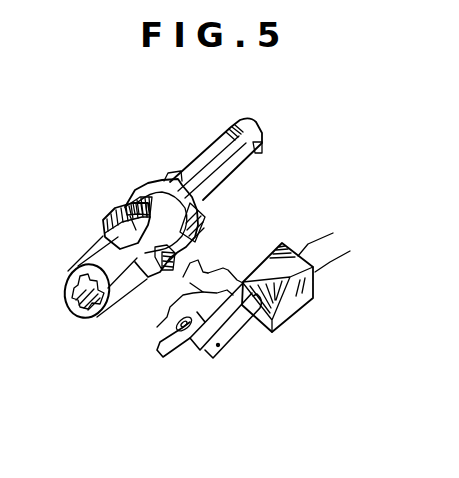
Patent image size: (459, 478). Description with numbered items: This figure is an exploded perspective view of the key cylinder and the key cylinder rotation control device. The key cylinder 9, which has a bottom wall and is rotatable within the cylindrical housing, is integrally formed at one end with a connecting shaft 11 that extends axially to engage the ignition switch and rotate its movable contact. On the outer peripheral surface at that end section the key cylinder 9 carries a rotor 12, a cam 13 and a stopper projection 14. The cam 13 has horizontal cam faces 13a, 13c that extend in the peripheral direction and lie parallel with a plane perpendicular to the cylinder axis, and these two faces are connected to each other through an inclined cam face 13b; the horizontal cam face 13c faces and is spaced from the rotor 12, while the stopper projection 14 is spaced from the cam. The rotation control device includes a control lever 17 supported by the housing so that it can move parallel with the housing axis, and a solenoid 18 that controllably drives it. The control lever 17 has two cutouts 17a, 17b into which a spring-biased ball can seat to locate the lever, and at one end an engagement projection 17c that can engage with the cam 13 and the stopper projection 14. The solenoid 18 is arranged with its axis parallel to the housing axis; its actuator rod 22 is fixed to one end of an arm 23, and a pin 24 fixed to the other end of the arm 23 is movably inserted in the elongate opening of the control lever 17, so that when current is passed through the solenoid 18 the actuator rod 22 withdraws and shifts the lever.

The key cylinder 9 is at (78, 265).
The connecting shaft 11 is at (252, 158).
The rotor 12 is at (104, 217).
The cam 13 is at (147, 186).
The horizontal cam face 13a is at (216, 212).
The inclined cam face 13b is at (173, 180).
The horizontal cam face 13c is at (130, 199).
The stopper projection 14 is at (152, 278).
The control lever 17 is at (228, 338).
The cutout 17a is at (180, 310).
The cutout 17b is at (220, 270).
The engagement projection 17c is at (205, 262).
The solenoid 18 is at (303, 304).
The actuator rod 22 is at (245, 330).
The arm 23 is at (195, 346).
The pin 24 is at (165, 330).